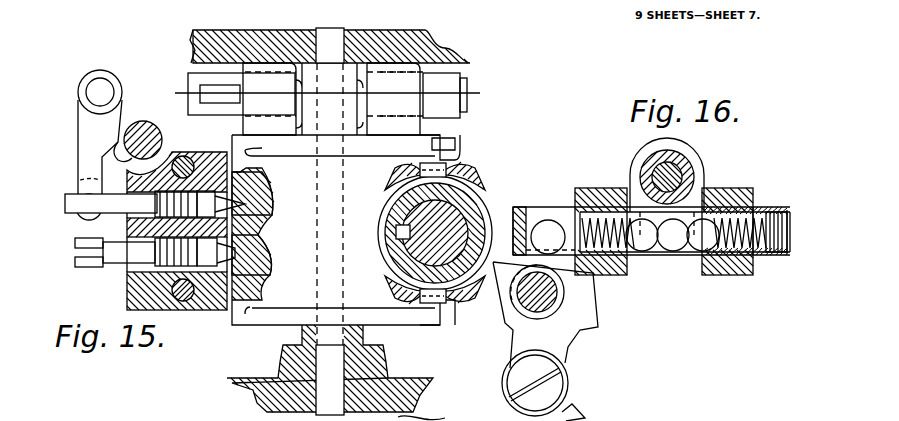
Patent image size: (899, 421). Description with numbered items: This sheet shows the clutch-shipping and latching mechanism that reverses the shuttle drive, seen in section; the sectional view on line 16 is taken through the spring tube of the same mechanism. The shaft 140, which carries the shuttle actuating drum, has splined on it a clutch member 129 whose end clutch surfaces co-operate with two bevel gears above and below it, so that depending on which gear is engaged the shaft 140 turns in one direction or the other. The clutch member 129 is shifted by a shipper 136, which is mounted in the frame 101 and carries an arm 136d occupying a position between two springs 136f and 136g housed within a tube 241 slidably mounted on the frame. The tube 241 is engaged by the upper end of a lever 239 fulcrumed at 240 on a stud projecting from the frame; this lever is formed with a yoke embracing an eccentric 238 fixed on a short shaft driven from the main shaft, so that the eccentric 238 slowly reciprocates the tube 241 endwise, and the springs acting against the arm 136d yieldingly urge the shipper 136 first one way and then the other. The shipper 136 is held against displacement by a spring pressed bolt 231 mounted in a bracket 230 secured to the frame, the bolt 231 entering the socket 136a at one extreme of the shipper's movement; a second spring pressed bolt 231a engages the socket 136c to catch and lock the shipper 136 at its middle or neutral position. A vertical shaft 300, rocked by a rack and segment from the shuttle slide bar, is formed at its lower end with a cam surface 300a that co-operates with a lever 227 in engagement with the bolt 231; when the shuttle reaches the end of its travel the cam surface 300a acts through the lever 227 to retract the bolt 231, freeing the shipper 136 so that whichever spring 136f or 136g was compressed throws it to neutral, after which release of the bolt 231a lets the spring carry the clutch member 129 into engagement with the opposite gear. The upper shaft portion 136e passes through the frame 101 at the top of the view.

In FIG. 15, the housing 101 is at (470, 61).
In FIG. 15, the shipper 136 is at (346, 230).
In FIG. 16, the shipper 136 is at (692, 161).
In FIG. 15, the spindle shaft 136e is at (333, 221).
In FIG. 16, the spindle shaft 136e is at (705, 178).
In FIG. 15, the socket 136a is at (246, 201).
In FIG. 15, the socket 136c is at (254, 246).
In FIG. 16, the arm 136d is at (673, 252).
In FIG. 16, the spring 136f is at (760, 257).
In FIG. 16, the spring 136g is at (629, 250).
In FIG. 15, the shaft 140 is at (452, 207).
In FIG. 15, the clutch member 129 is at (457, 213).
In FIG. 15, the lever 227 is at (78, 143).
In FIG. 15, the vertical shaft 300 is at (150, 116).
In FIG. 15, the cam surface 300a is at (108, 165).
In FIG. 15, the bracket 230 is at (214, 312).
In FIG. 15, the spring pressed bolt 231 is at (155, 204).
In FIG. 15, the spring pressed bolt 231a is at (155, 252).
In FIG. 15, the tube 241 is at (423, 95).
In FIG. 16, the tube 241 is at (757, 208).
In FIG. 15, the section line 16 is at (172, 73).
In FIG. 16, the eccentric 238 is at (562, 318).
In FIG. 16, the lever 239 is at (578, 343).
In FIG. 16, the fulcrum 240 is at (562, 366).